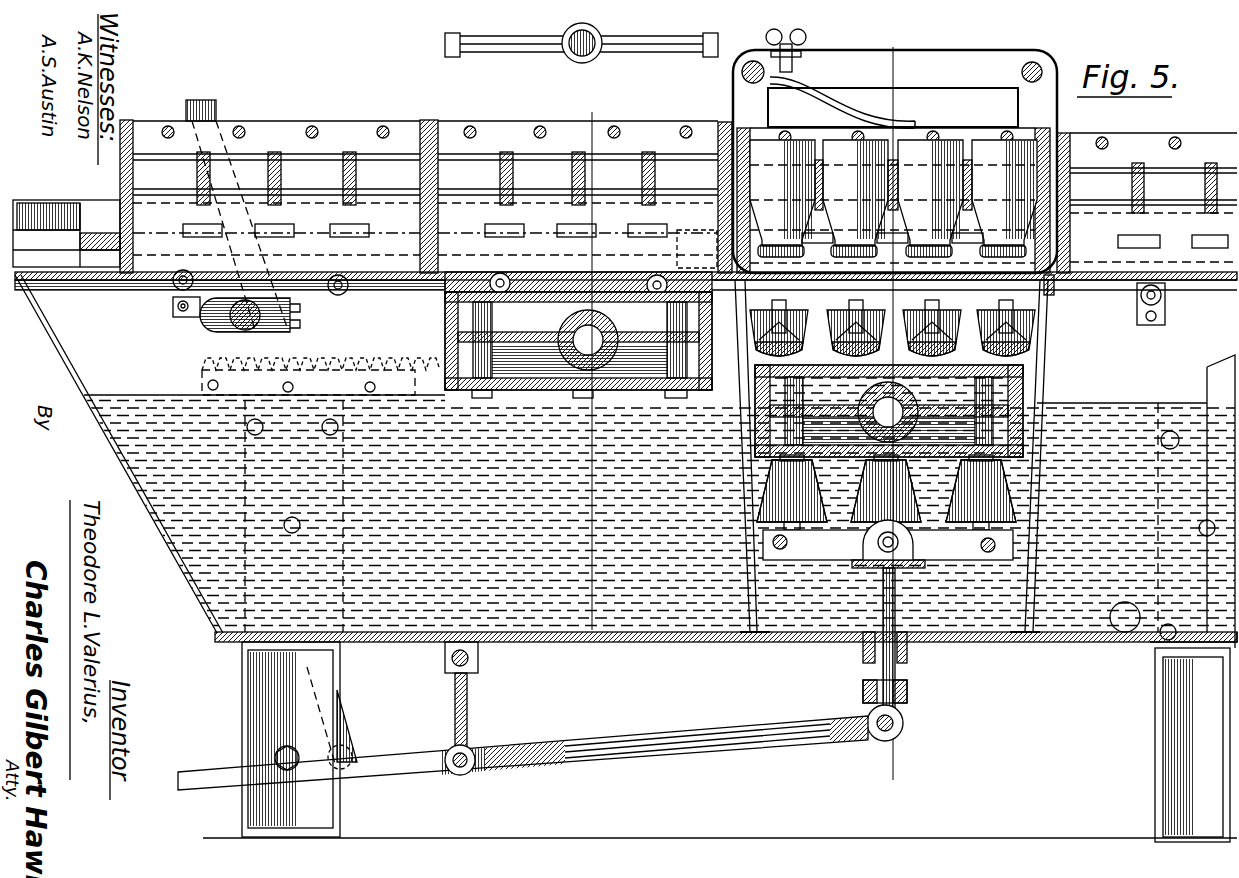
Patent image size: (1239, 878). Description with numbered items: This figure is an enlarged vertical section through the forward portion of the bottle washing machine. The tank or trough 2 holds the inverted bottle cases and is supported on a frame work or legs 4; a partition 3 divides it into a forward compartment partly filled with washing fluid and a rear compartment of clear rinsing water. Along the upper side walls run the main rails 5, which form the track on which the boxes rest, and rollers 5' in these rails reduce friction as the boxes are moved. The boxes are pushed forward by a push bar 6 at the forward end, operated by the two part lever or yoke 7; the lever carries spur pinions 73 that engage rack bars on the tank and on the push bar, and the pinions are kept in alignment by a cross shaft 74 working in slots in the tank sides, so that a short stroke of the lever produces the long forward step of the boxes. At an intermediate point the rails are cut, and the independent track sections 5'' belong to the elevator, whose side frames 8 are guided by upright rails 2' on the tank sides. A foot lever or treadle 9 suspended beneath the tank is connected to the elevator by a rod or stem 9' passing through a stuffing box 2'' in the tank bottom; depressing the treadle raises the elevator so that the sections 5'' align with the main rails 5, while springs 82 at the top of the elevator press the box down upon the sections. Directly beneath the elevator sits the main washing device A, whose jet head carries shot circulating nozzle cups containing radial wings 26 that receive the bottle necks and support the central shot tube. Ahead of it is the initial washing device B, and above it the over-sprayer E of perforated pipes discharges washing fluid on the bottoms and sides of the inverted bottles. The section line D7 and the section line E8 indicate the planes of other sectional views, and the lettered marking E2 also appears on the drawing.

The tank or trough 2 is at (626, 457).
The upright rails 2' is at (890, 654).
The stuffing box 2'' is at (903, 687).
The partition 3 is at (1207, 388).
The frame work or legs 4 is at (320, 681).
The main rails 5 is at (1131, 304).
The rollers 5' is at (684, 290).
The track sections 5'' is at (1002, 292).
The push bar 6 is at (99, 245).
The two part lever or yoke 7 is at (218, 115).
The spur pinions 73 is at (292, 315).
The cross shaft 74 is at (205, 330).
The side frames 8 is at (820, 70).
The springs 82 is at (846, 120).
The foot lever or treadle 9 is at (523, 748).
The rod or stem 9' is at (902, 653).
The radial wings 26 is at (802, 320).
The main washing device A is at (1025, 393).
The initial washing device B is at (555, 335).
The top or over-sprayer E is at (535, 55).
The section line E8 is at (595, 359).
The link E2 is at (521, 708).
The section line D7 is at (893, 770).